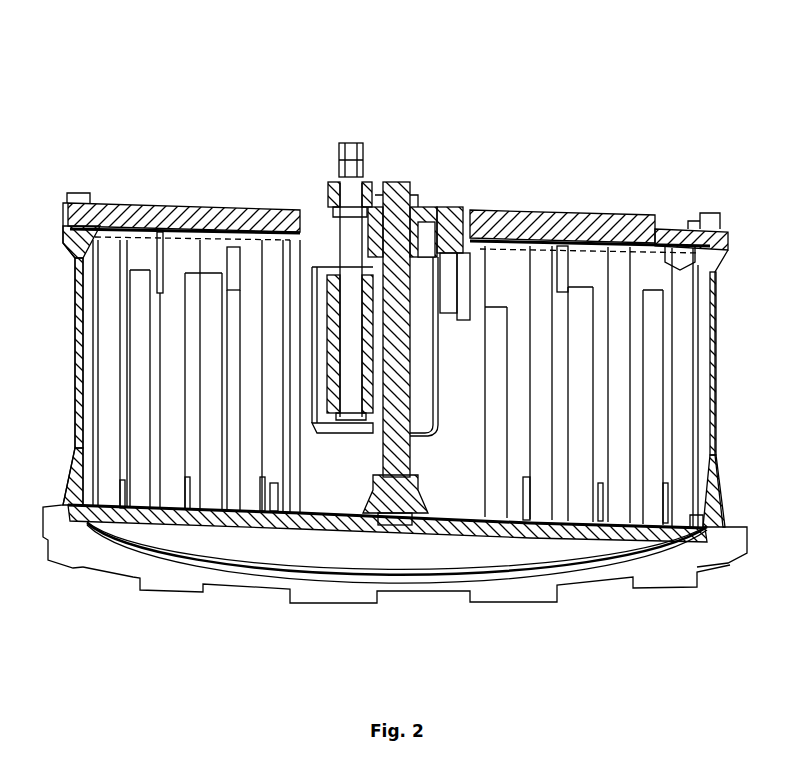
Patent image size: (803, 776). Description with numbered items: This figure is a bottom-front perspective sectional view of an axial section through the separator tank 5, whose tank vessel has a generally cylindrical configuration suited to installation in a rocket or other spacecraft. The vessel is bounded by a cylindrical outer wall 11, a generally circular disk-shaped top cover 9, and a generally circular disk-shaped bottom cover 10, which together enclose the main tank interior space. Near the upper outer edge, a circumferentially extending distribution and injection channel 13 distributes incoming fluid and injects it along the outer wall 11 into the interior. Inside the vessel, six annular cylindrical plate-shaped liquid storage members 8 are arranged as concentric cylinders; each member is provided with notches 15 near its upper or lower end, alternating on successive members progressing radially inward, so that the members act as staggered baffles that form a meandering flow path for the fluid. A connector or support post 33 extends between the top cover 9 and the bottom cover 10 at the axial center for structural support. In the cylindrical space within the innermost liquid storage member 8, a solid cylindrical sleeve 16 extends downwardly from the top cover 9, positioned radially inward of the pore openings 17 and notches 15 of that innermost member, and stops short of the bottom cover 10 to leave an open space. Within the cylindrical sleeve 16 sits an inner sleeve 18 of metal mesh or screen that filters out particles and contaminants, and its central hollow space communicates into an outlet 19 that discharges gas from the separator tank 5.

The separator tank 5 is at (112, 602).
The liquid storage members 8 is at (110, 263).
The top cover 9 is at (597, 250).
The bottom cover 10 is at (513, 540).
The cylindrical outer wall 11 is at (730, 400).
The distribution and injection channel 13 is at (683, 245).
The notches 15 is at (580, 265).
The cylindrical sleeve 16 is at (348, 178).
The pore openings 17 is at (493, 272).
The inner sleeve 18 is at (357, 390).
The outlet 19 is at (343, 150).
The support post 33 is at (408, 452).